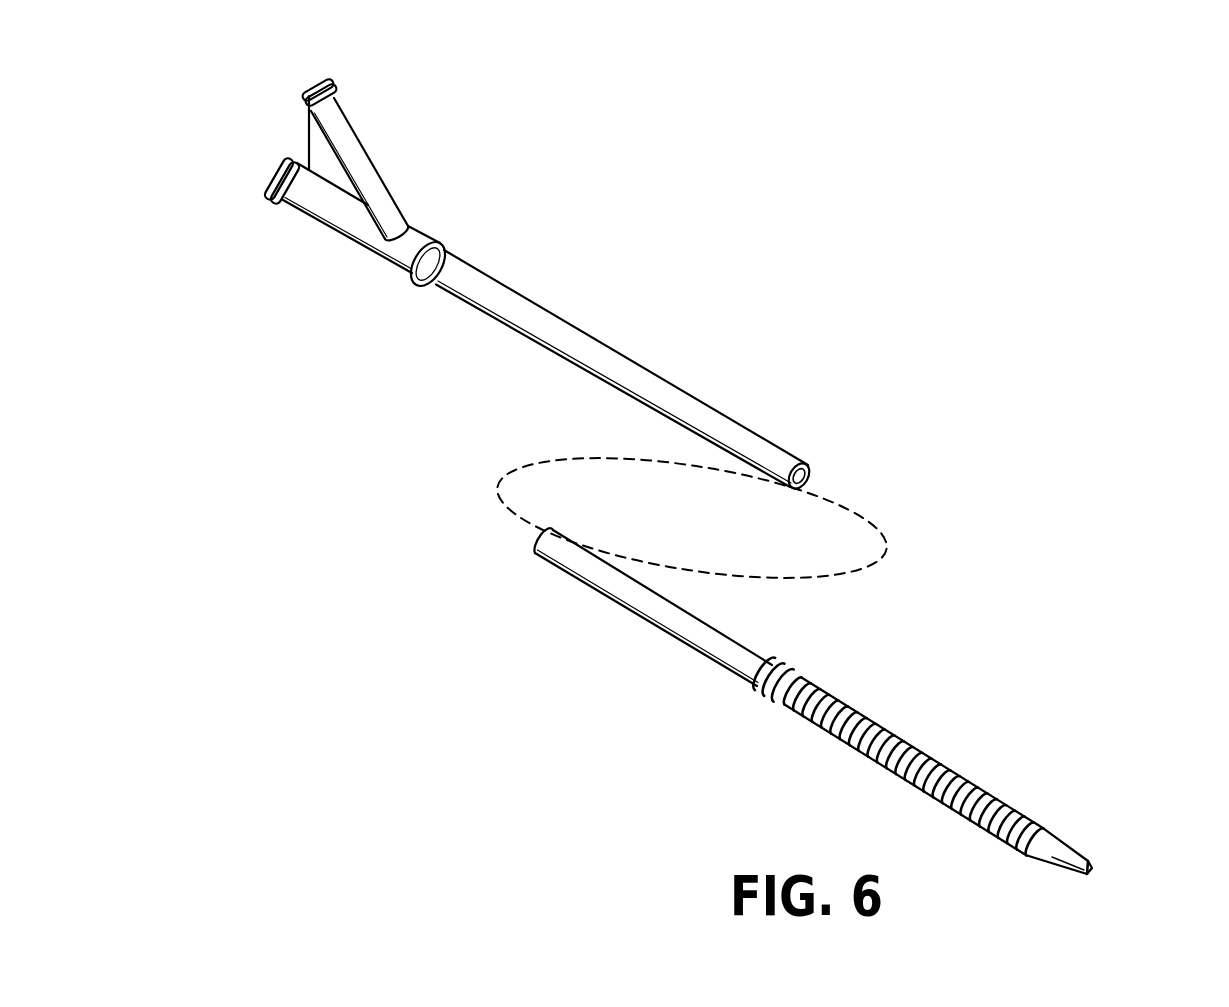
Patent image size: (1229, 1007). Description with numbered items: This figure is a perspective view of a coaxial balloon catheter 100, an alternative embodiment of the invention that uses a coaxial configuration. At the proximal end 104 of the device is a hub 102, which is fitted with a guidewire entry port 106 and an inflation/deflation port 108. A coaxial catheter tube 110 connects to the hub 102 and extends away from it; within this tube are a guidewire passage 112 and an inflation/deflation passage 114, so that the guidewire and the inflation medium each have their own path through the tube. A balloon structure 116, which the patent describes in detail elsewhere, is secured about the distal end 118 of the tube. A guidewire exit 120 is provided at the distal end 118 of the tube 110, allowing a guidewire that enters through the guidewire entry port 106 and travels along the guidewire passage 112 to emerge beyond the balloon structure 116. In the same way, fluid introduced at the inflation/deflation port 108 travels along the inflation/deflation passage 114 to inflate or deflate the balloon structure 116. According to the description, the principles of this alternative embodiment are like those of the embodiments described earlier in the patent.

The coaxial balloon catheter 100 is at (957, 232).
The hub 102 is at (336, 194).
The proximal end 104 is at (403, 123).
The guidewire entry port 106 is at (233, 177).
The inflation/deflation port 108 is at (291, 73).
The coaxial catheter tube 110 is at (648, 396).
The guidewire passage 112 is at (797, 490).
The inflation/deflation passage 114 is at (806, 466).
The balloon structure 116 is at (956, 740).
The distal end 118 is at (1099, 822).
The guidewire exit 120 is at (1141, 884).